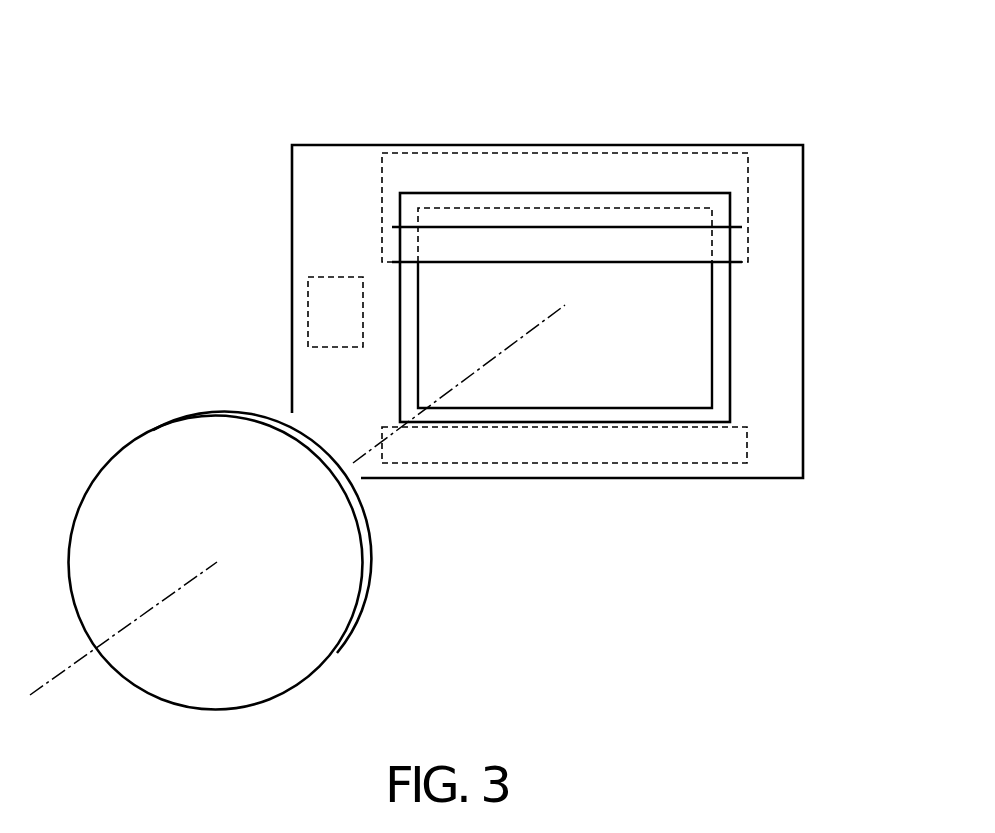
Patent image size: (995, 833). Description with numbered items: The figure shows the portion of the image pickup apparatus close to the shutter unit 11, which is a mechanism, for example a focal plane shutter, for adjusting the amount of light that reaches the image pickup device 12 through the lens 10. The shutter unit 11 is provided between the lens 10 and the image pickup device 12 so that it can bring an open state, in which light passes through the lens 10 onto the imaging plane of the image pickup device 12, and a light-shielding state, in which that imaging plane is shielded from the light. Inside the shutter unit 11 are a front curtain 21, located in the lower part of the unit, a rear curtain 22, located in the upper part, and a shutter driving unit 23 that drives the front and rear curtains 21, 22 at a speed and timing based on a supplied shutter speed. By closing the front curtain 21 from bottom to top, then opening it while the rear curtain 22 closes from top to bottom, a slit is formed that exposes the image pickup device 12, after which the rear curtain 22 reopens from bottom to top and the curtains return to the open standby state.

The lens 10 is at (132, 445).
The shutter unit 11 is at (761, 95).
The image pickup device 12 is at (710, 337).
The front curtain 21 is at (598, 465).
The rear curtain 22 is at (625, 238).
The shutter driving unit 23 is at (312, 312).